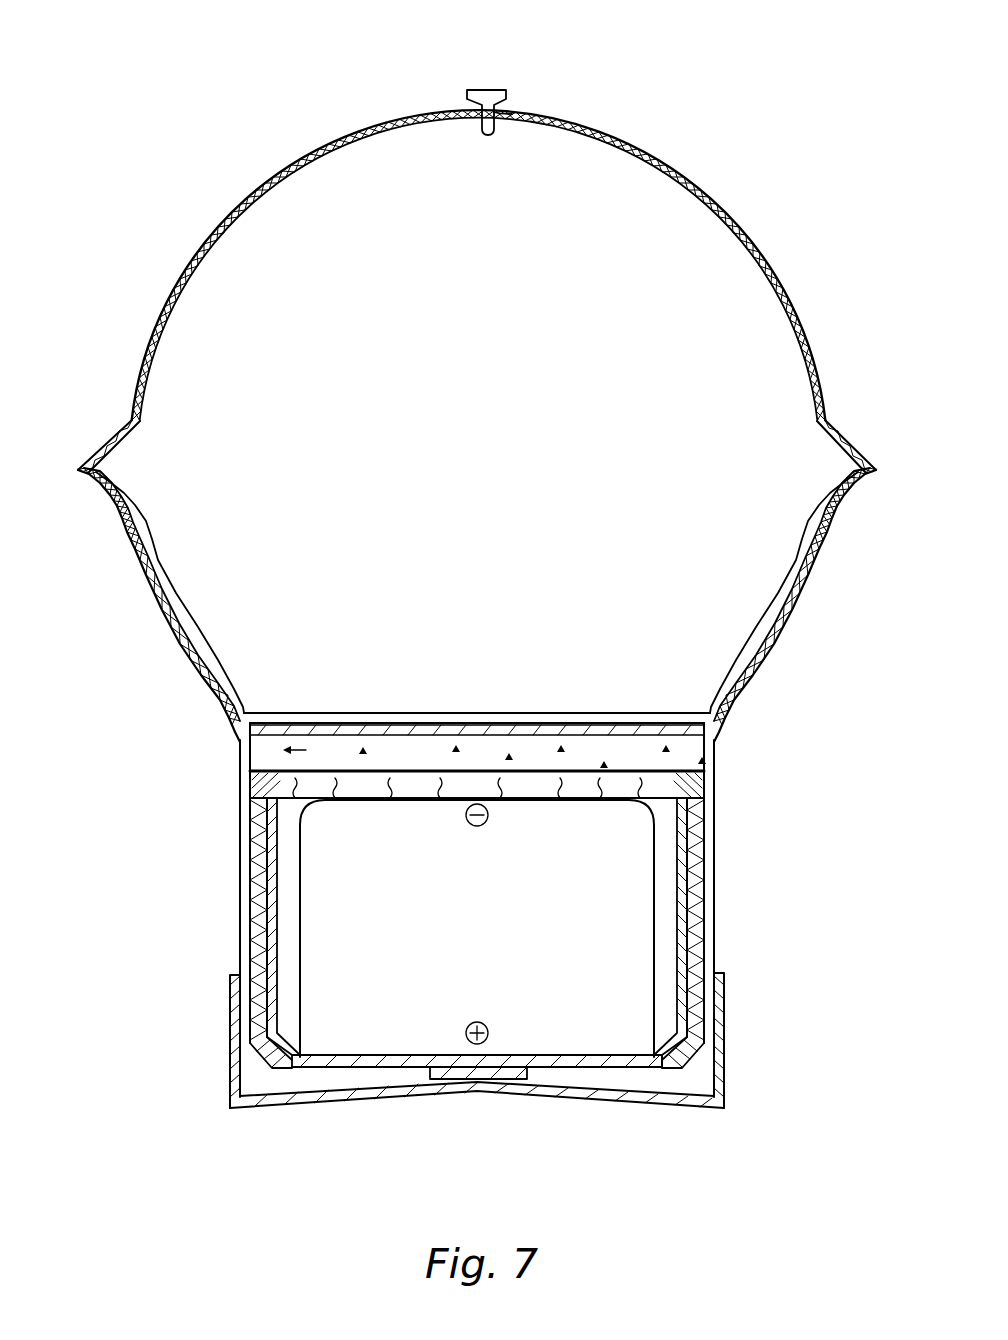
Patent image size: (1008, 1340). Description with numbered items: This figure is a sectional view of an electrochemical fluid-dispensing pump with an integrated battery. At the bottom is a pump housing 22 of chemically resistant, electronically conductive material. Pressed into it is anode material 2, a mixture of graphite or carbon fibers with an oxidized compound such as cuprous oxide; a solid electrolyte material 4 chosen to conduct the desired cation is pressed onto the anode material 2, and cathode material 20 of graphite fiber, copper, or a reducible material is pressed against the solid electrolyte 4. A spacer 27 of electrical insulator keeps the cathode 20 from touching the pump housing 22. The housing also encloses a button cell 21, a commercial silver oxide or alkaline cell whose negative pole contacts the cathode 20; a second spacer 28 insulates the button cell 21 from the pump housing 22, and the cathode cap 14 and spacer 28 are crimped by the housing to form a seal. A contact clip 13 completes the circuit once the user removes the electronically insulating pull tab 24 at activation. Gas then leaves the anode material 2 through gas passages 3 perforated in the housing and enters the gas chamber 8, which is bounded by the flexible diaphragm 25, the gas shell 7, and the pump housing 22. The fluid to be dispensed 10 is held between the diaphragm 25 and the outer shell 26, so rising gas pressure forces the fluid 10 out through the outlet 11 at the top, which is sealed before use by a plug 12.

The anode material 2 is at (283, 750).
The gas passages 3 is at (657, 727).
The solid electrolyte material 4 is at (248, 768).
The gas shell 7 is at (828, 527).
The gas chamber 8 is at (797, 614).
The fluid to be dispensed 10 is at (700, 315).
The fluid sack outlet 11 is at (505, 112).
The plug 12 is at (495, 90).
The contact clip 13 is at (723, 1073).
The cathode cap 14 is at (357, 1067).
The cathode material 20 is at (716, 744).
The button cell 21 is at (610, 905).
The pump housing 22 is at (240, 813).
The pull tab 24 is at (480, 1083).
The flexible diaphragm 25 is at (812, 564).
The outer shell 26 is at (696, 181).
The spacer 27 is at (690, 790).
The spacer 28 is at (697, 852).